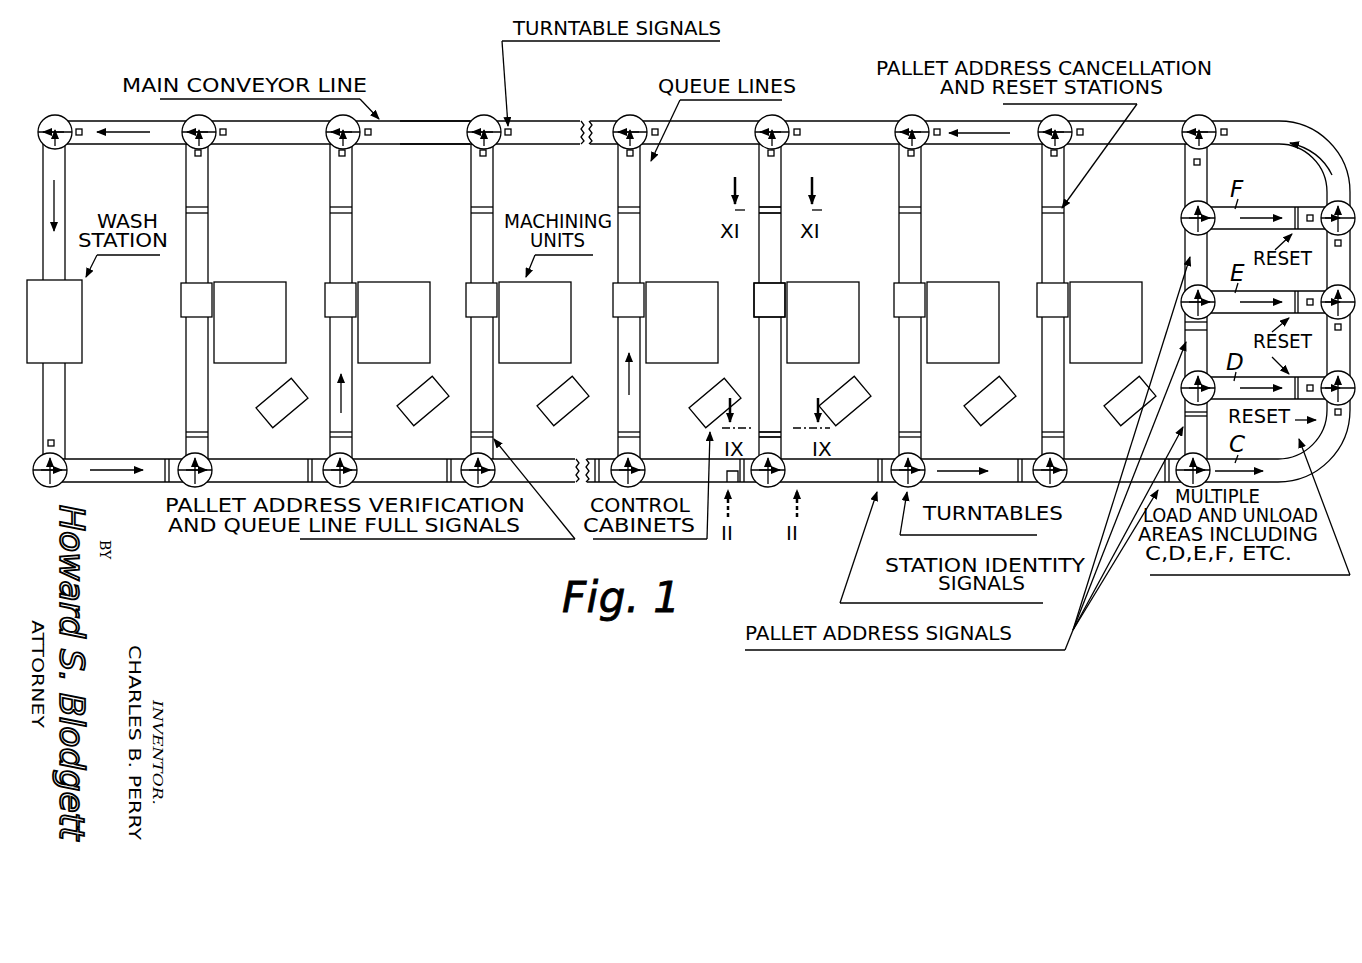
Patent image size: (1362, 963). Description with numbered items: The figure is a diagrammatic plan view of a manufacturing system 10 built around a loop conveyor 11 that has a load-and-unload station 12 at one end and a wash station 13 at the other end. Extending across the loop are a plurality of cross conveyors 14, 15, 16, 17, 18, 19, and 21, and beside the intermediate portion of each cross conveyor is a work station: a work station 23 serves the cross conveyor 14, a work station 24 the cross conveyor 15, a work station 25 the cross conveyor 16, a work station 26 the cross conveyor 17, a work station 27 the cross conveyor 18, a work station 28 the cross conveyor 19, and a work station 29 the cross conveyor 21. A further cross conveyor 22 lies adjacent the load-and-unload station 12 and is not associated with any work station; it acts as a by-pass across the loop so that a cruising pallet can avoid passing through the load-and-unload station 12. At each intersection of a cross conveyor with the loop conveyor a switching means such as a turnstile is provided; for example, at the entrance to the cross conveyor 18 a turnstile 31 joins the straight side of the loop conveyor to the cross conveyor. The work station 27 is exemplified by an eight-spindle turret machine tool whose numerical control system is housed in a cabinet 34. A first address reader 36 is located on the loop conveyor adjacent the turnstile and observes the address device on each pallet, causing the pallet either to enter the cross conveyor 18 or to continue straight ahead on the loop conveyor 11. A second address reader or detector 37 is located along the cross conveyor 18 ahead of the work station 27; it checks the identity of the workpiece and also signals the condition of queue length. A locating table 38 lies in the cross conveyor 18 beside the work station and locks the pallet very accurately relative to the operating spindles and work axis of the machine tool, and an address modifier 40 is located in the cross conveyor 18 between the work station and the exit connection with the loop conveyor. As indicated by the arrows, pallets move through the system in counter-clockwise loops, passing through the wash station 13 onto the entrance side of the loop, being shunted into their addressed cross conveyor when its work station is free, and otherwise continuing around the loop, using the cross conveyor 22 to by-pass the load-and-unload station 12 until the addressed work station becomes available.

The manufacturing system 10 is at (555, 120).
The loop conveyor 11 is at (440, 121).
The load-and-unload station 12 is at (1292, 136).
The wash station 13 is at (82, 352).
The cross conveyor 14 is at (208, 243).
The cross conveyor 15 is at (350, 243).
The cross conveyor 16 is at (471, 244).
The cross conveyor 17 is at (640, 247).
The cross conveyor 18 is at (782, 263).
The cross conveyor 19 is at (922, 246).
The cross conveyor 21 is at (1066, 243).
The cross conveyor 22 is at (1190, 170).
The work station 23 is at (261, 287).
The work station 24 is at (399, 287).
The work station 25 is at (563, 352).
The work station 26 is at (699, 287).
The work station 27 is at (854, 288).
The work station 28 is at (980, 288).
The work station 29 is at (1121, 288).
The turnstile 31 is at (770, 488).
The cabinet 34 is at (831, 403).
The first address reader 36 is at (745, 485).
The second address reader 37 is at (764, 349).
The locating table 38 is at (761, 298).
The address modifier 40 is at (783, 201).